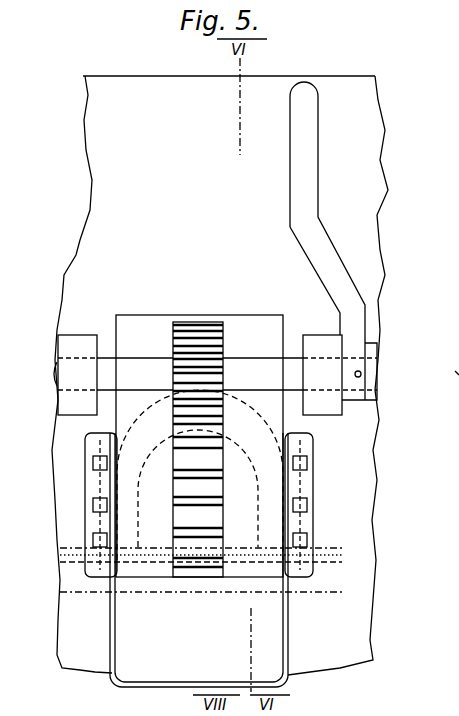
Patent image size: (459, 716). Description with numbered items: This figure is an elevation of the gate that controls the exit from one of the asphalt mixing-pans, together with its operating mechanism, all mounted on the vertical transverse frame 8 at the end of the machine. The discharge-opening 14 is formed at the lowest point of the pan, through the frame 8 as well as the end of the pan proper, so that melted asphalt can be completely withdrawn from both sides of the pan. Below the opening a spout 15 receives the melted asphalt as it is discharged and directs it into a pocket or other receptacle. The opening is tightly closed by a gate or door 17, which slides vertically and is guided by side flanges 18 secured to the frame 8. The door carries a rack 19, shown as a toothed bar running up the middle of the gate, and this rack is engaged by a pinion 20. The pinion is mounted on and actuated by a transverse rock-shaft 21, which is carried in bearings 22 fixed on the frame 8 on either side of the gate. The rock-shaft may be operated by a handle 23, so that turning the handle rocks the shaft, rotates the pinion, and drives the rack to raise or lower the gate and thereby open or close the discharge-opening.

The transverse frame 8 is at (220, 375).
The discharge-opening 14 is at (250, 450).
The spout 15 is at (201, 501).
The gate or door 17 is at (194, 488).
The side flanges 18 is at (90, 492).
The rack 19 is at (207, 502).
The pinion 20 is at (185, 362).
The transverse rock-shaft 21 is at (458, 360).
The bearings 22 is at (200, 375).
The handle 23 is at (293, 212).